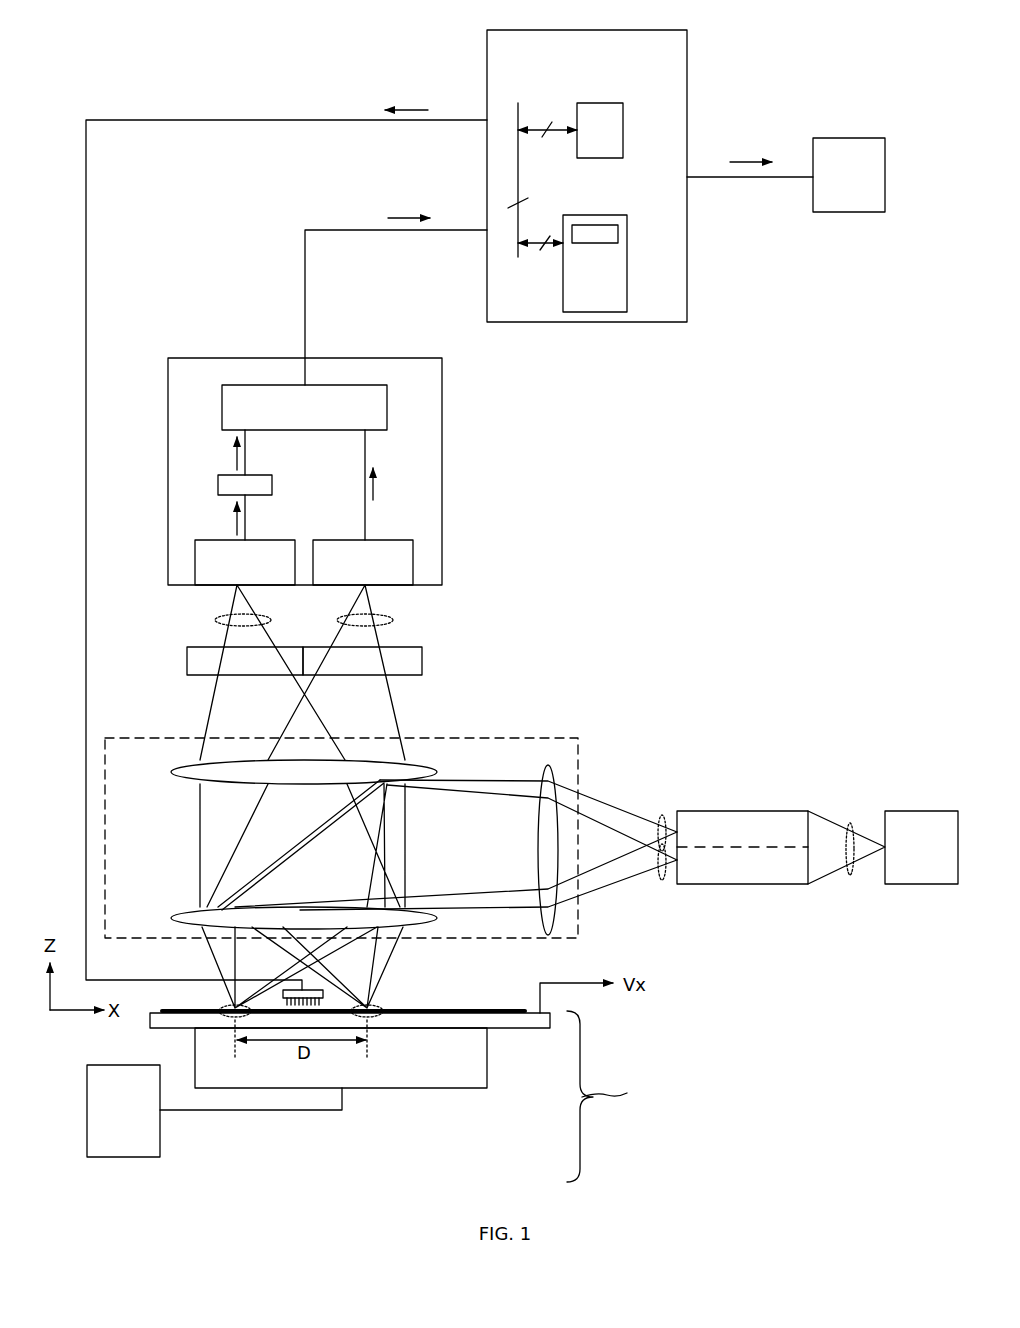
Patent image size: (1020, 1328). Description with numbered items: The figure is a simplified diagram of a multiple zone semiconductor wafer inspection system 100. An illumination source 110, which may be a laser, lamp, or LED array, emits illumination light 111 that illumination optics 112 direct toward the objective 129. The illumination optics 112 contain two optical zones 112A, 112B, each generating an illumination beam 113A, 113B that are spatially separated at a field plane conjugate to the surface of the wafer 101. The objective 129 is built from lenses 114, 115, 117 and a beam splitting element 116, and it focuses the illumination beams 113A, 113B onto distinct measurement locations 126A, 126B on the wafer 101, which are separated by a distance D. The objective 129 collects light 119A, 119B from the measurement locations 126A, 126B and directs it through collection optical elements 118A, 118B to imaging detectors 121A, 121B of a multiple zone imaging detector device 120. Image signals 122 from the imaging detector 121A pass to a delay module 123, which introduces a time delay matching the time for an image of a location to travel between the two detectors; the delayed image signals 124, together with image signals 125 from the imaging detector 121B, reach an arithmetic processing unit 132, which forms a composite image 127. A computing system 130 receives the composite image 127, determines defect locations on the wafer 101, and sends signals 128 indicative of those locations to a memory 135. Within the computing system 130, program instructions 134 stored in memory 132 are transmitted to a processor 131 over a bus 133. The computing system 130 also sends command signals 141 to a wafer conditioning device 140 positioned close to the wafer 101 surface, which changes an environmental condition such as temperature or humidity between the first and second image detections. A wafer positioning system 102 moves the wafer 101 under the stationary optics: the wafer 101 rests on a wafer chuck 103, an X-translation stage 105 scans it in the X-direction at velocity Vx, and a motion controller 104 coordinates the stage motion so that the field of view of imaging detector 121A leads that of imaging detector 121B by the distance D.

The wafer inspection system 100 is at (145, 72).
The wafer 101 is at (500, 1008).
The wafer positioning system 102 is at (663, 1096).
The wafer chuck 103 is at (527, 1030).
The motion controller 104 is at (214, 1111).
The X-translation stage 105 is at (415, 1090).
The illumination source 110 is at (921, 847).
The illumination light 111 is at (851, 822).
The illumination optics 112 is at (739, 809).
The optical zone 112A is at (742, 831).
The optical zone 112B is at (742, 869).
The illumination beam 113A is at (661, 813).
The illumination beam 113B is at (662, 881).
The lens 114 is at (537, 850).
The lens 115 is at (173, 773).
The beam splitting element 116 is at (303, 843).
The lens 117 is at (173, 917).
The collection optical element 118A is at (187, 662).
The collection optical element 118B is at (422, 662).
The collected light 119A is at (217, 620).
The collected light 119B is at (393, 620).
The multiple zone imaging detector device 120 is at (197, 354).
The imaging detector 121A is at (245, 562).
The imaging detector 121B is at (363, 562).
The image signals 122 is at (234, 519).
The delay module 123 is at (272, 485).
The delayed image signals 124 is at (234, 454).
The image signals 125 is at (375, 483).
The measurement location 126A is at (220, 1007).
The measurement location 126B is at (380, 1007).
The composite image 127 is at (403, 217).
The signals 128 is at (751, 158).
The objective 129 is at (540, 738).
The computing system 130 is at (587, 176).
The processor 131 is at (623, 130).
The arithmetic processing unit / memory 132 is at (563, 290).
The bus 133 is at (518, 172).
The program instructions 134 is at (618, 238).
The memory 135 is at (786, 175).
The wafer conditioning device 140 is at (337, 990).
The command signals 141 is at (408, 108).